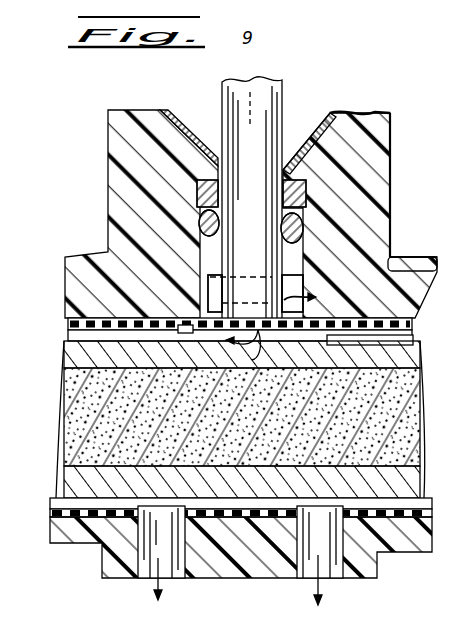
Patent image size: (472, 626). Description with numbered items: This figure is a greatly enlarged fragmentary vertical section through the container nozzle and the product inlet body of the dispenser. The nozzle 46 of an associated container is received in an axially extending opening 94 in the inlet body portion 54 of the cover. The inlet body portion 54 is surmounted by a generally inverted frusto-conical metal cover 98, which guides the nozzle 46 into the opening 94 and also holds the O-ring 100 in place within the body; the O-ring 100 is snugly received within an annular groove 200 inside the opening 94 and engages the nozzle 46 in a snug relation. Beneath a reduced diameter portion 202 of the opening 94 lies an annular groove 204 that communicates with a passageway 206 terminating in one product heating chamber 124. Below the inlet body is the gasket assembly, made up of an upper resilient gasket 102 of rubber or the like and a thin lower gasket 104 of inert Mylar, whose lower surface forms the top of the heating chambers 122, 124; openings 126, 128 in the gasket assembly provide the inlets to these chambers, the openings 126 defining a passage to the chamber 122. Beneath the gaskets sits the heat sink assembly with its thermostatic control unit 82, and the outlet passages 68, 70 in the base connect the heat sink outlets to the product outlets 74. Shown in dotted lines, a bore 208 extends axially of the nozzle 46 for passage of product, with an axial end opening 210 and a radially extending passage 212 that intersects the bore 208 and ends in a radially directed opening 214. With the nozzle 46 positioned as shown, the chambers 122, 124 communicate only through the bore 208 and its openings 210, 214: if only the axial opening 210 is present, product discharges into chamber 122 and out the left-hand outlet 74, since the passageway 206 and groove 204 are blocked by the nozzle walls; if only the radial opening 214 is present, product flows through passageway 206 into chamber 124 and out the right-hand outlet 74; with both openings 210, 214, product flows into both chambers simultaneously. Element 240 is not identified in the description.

The nozzle 46 is at (291, 173).
The inlet body portion 54 is at (400, 183).
The outlet passage 68 is at (83, 500).
The outlet passage 70 is at (400, 507).
The product outlets 74 is at (170, 567).
The thermostatic control unit 82 is at (384, 436).
The opening 94 is at (305, 128).
The metal cover 98 is at (208, 100).
The O-ring 100 is at (388, 240).
The upper gasket 102 is at (68, 312).
The lower gasket 104 is at (72, 331).
The heating chamber 122 is at (80, 348).
The heating chamber 124 is at (403, 344).
The openings 126 is at (256, 326).
The openings 128 is at (388, 267).
The annular groove 200 is at (203, 246).
The reduced diameter portion 202 is at (300, 243).
The annular groove 204 is at (205, 288).
The passageway 206 is at (393, 244).
The bore 208 is at (236, 80).
The axial end opening 210 is at (247, 372).
The radially extending passage 212 is at (189, 334).
The radially directed opening 214 is at (293, 304).
The sealing band 240 is at (93, 517).